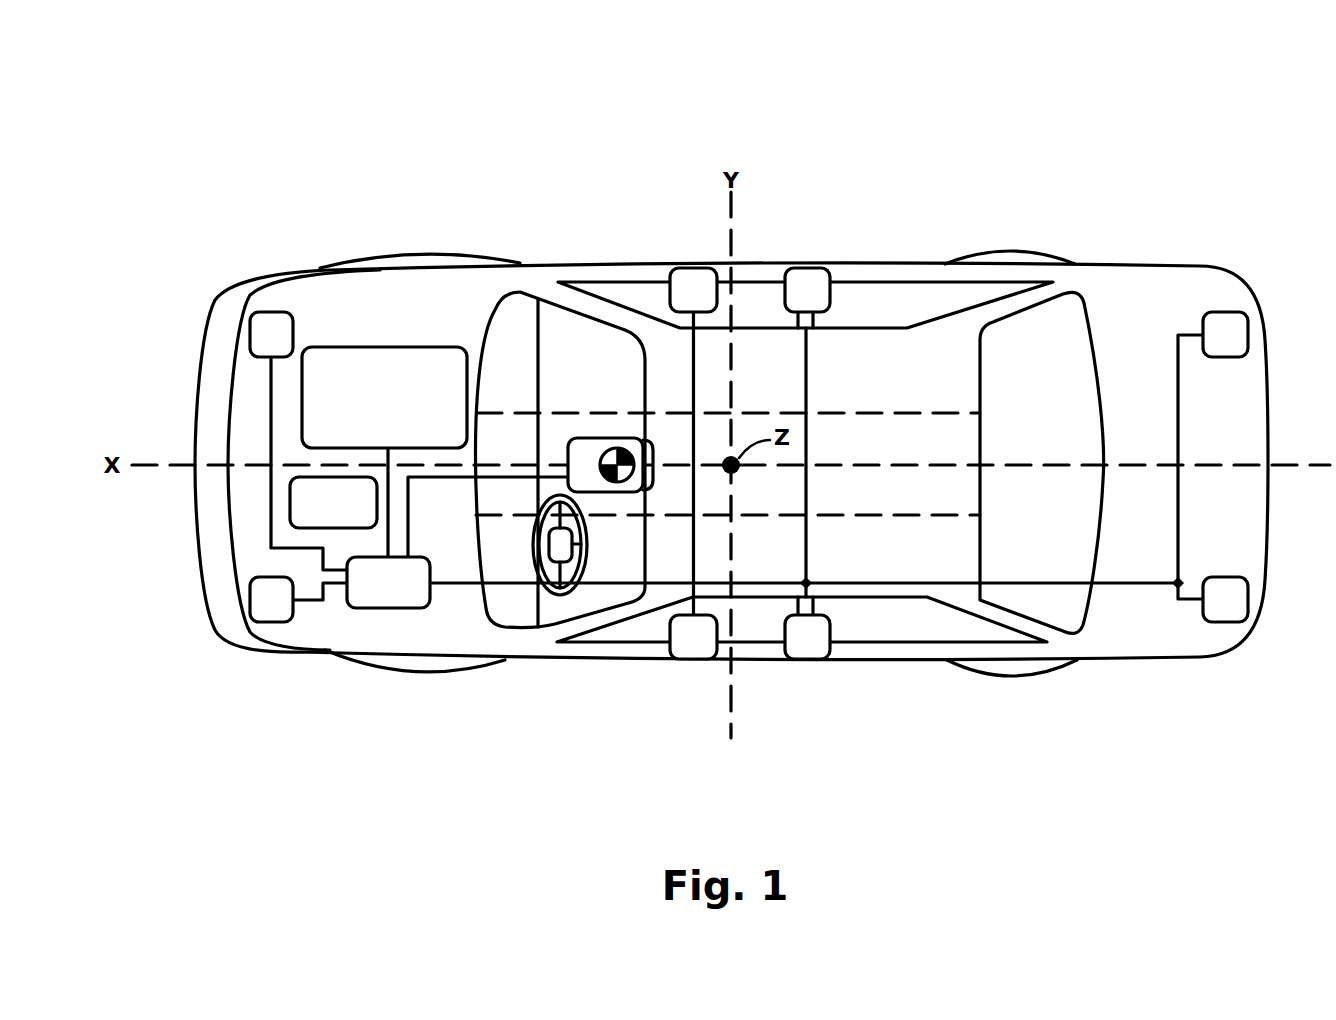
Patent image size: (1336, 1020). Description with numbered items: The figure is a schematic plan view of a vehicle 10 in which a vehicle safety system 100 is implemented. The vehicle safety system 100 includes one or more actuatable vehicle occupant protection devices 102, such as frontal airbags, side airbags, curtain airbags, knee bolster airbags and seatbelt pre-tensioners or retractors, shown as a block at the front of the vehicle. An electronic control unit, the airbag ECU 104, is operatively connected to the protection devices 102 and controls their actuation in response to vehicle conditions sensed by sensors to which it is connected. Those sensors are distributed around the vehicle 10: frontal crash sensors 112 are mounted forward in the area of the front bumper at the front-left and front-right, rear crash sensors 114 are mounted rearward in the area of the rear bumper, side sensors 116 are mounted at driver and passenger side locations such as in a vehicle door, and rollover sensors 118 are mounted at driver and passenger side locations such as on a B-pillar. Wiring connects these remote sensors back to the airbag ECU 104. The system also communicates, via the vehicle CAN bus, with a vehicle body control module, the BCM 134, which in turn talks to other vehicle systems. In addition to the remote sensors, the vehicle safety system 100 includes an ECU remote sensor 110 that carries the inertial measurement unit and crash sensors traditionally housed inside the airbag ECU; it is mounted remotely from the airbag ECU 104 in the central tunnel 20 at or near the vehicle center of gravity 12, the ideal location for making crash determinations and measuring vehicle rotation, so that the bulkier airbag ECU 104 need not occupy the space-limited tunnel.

The vehicle 10 is at (344, 110).
The vehicle safety system 100 is at (344, 188).
The actuatable vehicle occupant protection devices 102 is at (388, 347).
The electronic control unit (airbag ECU) 104 is at (384, 608).
The ECU remote sensor 110 is at (598, 416).
The vehicle center of gravity (COG) 12 is at (611, 440).
The frontal crash sensors 112 is at (254, 313).
The rear crash sensors 114 is at (1219, 312).
The side sensors 116 is at (688, 268).
The rollover sensors 118 is at (822, 268).
The vehicle body control module (BCM) 134 is at (327, 477).
The central tunnel 20 is at (881, 413).